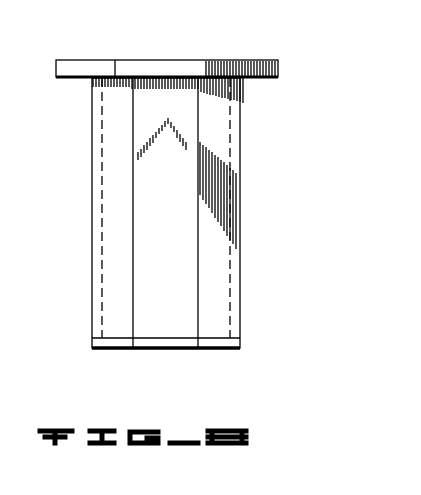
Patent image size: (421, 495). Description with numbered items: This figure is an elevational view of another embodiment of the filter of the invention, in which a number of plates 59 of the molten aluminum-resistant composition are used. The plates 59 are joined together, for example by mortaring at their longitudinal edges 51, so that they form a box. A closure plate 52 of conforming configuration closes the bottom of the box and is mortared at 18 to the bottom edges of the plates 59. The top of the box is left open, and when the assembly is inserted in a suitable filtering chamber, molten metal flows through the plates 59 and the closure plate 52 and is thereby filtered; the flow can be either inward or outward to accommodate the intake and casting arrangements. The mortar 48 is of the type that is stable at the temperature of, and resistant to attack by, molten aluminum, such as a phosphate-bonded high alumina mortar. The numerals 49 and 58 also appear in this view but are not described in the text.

The mortar 18 is at (242, 338).
The mortar 48 is at (222, 82).
The top bar 49 is at (248, 72).
The longitudinal edges 51 is at (133, 181).
The closure plate 52 is at (232, 350).
The bar division 58 is at (118, 70).
The plates 59 is at (118, 117).